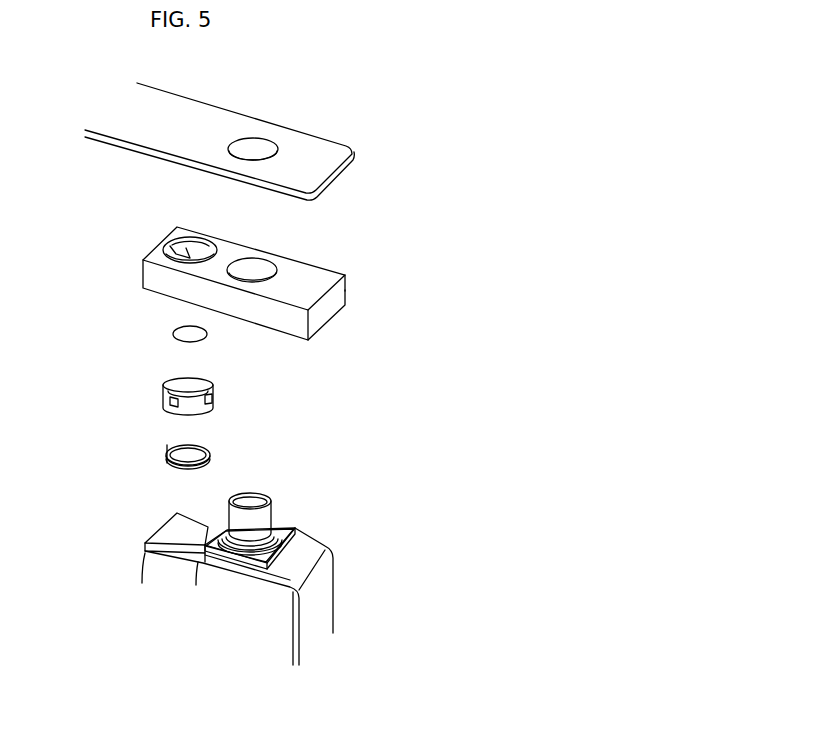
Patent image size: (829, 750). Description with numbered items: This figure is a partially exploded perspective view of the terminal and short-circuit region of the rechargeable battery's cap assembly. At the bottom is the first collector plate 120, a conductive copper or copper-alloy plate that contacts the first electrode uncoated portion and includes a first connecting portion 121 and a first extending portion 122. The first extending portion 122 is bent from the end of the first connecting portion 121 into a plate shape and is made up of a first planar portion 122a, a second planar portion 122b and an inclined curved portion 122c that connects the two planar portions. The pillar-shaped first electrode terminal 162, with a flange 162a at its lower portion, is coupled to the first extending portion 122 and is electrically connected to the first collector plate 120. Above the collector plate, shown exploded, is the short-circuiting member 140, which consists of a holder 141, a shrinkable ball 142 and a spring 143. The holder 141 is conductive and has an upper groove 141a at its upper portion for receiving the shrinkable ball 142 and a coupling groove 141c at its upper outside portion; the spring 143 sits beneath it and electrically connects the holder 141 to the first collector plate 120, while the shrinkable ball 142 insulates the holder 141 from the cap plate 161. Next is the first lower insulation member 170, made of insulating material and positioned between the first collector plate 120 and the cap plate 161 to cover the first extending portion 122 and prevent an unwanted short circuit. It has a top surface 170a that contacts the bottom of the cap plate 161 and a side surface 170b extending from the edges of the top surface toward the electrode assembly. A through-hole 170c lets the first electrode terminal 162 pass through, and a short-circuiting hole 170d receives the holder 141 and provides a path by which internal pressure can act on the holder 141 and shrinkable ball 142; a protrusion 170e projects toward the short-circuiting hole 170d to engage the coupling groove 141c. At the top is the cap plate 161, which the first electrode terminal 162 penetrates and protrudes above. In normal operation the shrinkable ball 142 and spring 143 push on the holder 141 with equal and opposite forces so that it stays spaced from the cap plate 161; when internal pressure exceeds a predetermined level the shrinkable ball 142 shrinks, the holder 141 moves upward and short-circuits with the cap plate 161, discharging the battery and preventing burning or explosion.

The first collector plate 120 is at (260, 589).
The first connecting portion 121 is at (331, 597).
The first extending portion 122 is at (199, 600).
The first planar portion 122a is at (250, 584).
The second planar portion 122b is at (167, 542).
The curved portion 122c is at (200, 560).
The short-circuiting member 140 is at (158, 397).
The holder 141 is at (189, 379).
The upper groove 141a is at (206, 384).
The coupling groove 141c is at (213, 400).
The shrinkable ball 142 is at (175, 331).
The spring 143 is at (144, 456).
The cap plate 161 is at (315, 148).
The first electrode terminal 162 is at (252, 500).
The flange 162a is at (280, 527).
The first lower insulation member 170 is at (251, 272).
The top surface 170a is at (316, 275).
The side surface 170b is at (333, 310).
The through-hole 170c is at (258, 262).
The short-circuiting hole 170d is at (183, 247).
The protrusion 170e is at (160, 236).